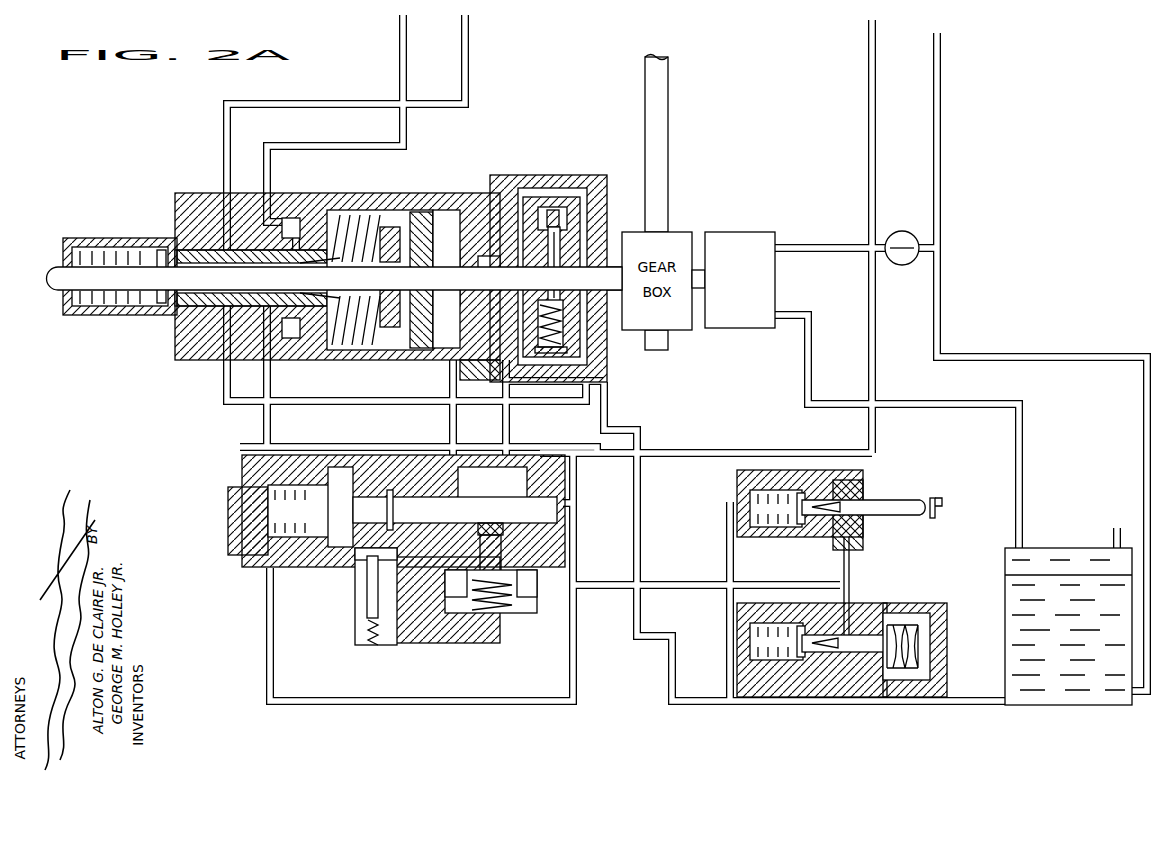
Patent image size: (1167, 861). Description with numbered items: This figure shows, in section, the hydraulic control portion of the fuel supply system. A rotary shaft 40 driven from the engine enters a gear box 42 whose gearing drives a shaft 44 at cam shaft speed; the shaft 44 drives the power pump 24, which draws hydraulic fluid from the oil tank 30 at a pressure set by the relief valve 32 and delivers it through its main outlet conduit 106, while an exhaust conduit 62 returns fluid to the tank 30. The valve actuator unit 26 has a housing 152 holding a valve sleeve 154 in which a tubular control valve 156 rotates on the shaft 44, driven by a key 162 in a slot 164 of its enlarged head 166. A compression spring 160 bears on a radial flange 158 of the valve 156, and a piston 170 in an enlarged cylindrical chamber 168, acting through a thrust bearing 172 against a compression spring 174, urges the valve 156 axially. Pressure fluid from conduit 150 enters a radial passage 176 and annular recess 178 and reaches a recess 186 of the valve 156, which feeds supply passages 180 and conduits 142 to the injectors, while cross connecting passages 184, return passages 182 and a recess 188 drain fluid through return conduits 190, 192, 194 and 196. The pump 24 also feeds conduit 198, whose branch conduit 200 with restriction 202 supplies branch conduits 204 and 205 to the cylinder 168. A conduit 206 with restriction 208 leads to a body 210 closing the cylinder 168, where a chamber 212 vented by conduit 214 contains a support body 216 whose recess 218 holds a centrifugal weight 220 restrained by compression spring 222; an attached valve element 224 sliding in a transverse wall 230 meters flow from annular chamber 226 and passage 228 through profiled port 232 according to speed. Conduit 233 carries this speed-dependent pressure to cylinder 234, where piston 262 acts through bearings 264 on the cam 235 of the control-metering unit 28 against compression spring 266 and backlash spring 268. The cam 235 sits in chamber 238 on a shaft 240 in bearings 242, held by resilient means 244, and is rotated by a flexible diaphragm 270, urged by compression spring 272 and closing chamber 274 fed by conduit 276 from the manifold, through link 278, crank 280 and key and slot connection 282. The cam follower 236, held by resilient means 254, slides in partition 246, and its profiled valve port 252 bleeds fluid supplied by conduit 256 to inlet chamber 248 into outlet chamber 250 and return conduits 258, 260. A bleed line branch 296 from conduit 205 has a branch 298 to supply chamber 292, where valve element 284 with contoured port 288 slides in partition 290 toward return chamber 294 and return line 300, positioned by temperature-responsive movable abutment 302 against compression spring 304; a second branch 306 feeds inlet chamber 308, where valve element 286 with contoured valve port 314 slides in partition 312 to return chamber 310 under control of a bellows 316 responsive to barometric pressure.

The power pump 24 is at (745, 232).
The valve actuator unit 26 is at (178, 360).
The control-metering unit 28 is at (345, 650).
The oil tank 30 is at (1082, 548).
The relief valve 32 is at (905, 231).
The rotary shaft 40 is at (668, 140).
The gear box 42 is at (668, 340).
The shaft 44 is at (615, 265).
The exhaust conduit 62 is at (942, 152).
The main outlet conduit 106 is at (868, 118).
The supply conduit 142 is at (400, 78).
The conduit 150 is at (470, 97).
The housing 152 is at (192, 193).
The valve sleeve 154 is at (210, 252).
The control valve 156 is at (185, 310).
The radial flange 158 is at (160, 305).
The compression spring 160 is at (95, 240).
The key 162 is at (373, 210).
The elongated slot 164 is at (425, 260).
The enlarged head 166 is at (375, 360).
The cylindrical chamber 168 is at (475, 215).
The piston 170 is at (445, 212).
The thrust bearing 172 is at (390, 227).
The compression spring 174 is at (355, 215).
The radial passage 176 is at (205, 240).
The annular recess 178 is at (215, 360).
The supply passage 180 is at (231, 212).
The return passage 182 is at (300, 200).
The cross connecting passage 184 is at (290, 215).
The recess 186 is at (232, 270).
The recess 188 is at (310, 275).
The return conduit 190 is at (405, 402).
The return conduit 192 is at (642, 545).
The return conduit 194 is at (668, 658).
The return conduit 196 is at (975, 706).
The conduit 198 is at (800, 450).
The branch conduit 200 is at (600, 456).
The restriction 202 is at (575, 504).
The branch conduit 204 is at (580, 590).
The branch conduit 205 is at (448, 380).
The conduit 206 is at (508, 383).
The restriction 208 is at (540, 442).
The body 210 is at (515, 178).
The chamber 212 is at (552, 207).
The conduit 214 is at (604, 418).
The support body 216 is at (585, 225).
The recess 218 is at (583, 283).
The centrifugal weight 220 is at (565, 335).
The compression spring 222 is at (570, 352).
The movable valve element 224 is at (568, 220).
The annular chamber 226 is at (494, 256).
The passage 228 is at (500, 195).
The transverse wall 230 is at (556, 210).
The valve port 232 is at (560, 214).
The conduit 233 is at (275, 455).
The cylinder 234 is at (240, 540).
The cam 235 is at (388, 490).
The cam follower 236 is at (380, 602).
The chamber 238 is at (335, 467).
The shaft 240 is at (448, 516).
The bearings 242 is at (462, 496).
The resilient means 244 is at (400, 450).
The partition 246 is at (368, 572).
The inlet chamber 248 is at (358, 560).
The outlet chamber 250 is at (392, 655).
The valve port 252 is at (370, 592).
The resilient means 254 is at (372, 652).
The conduit 256 is at (565, 706).
The return conduit 258 is at (435, 643).
The return conduit 260 is at (540, 643).
The piston 262 is at (235, 490).
The bearings 264 is at (448, 448).
The compression spring 266 is at (300, 540).
The backlash spring 268 is at (502, 452).
The flexible diaphragm 270 is at (455, 598).
The compression spring 272 is at (490, 613).
The chamber 274 is at (525, 598).
The conduit 276 is at (548, 604).
The link 278 is at (503, 560).
The crank 280 is at (500, 530).
The key and slot connection 282 is at (485, 523).
The movable valve element 284 is at (880, 503).
The movable valve element 286 is at (888, 612).
The contoured port 288 is at (822, 537).
The partition 290 is at (838, 482).
The supply chamber 292 is at (862, 482).
The return chamber 294 is at (780, 482).
The bleed line branch 296 is at (700, 583).
The branch 298 is at (851, 575).
The return line 300 is at (735, 582).
The movable abutment 302 is at (940, 508).
The compression spring 304 is at (740, 500).
The second branch 306 is at (835, 604).
The inlet chamber 308 is at (845, 654).
The return chamber 310 is at (790, 660).
The partition 312 is at (840, 662).
The contoured valve port 314 is at (848, 626).
The bellows 316 is at (930, 640).